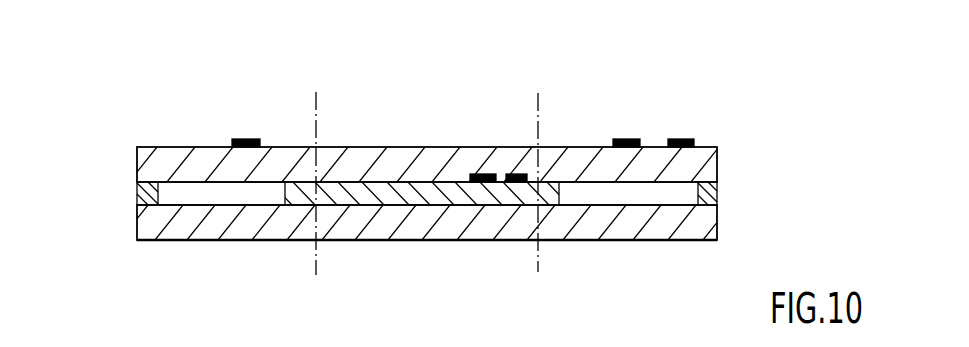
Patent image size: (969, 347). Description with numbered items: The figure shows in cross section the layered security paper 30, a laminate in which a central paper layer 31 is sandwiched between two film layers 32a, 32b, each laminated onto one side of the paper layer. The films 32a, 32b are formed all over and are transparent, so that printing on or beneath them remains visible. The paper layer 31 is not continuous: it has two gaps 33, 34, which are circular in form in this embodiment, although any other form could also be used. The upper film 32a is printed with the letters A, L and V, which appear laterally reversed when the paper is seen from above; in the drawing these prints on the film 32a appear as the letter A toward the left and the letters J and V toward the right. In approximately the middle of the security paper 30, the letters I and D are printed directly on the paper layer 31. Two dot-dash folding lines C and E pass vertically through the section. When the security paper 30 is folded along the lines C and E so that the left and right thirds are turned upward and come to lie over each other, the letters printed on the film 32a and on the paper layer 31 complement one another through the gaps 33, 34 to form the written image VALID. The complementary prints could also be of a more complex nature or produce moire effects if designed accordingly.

The security paper 30 is at (425, 186).
The paper layer 31 is at (147, 193).
The film layer 32a is at (710, 162).
The film layer 32b is at (702, 222).
The gap 33 is at (188, 192).
The gap 34 is at (627, 192).
The printed letter A is at (243, 137).
The folding line C- C is at (315, 186).
The printed letter D is at (512, 173).
The folding line E- E is at (539, 186).
The printed letter I is at (477, 172).
The chip J is at (627, 138).
The printed letter V is at (678, 138).